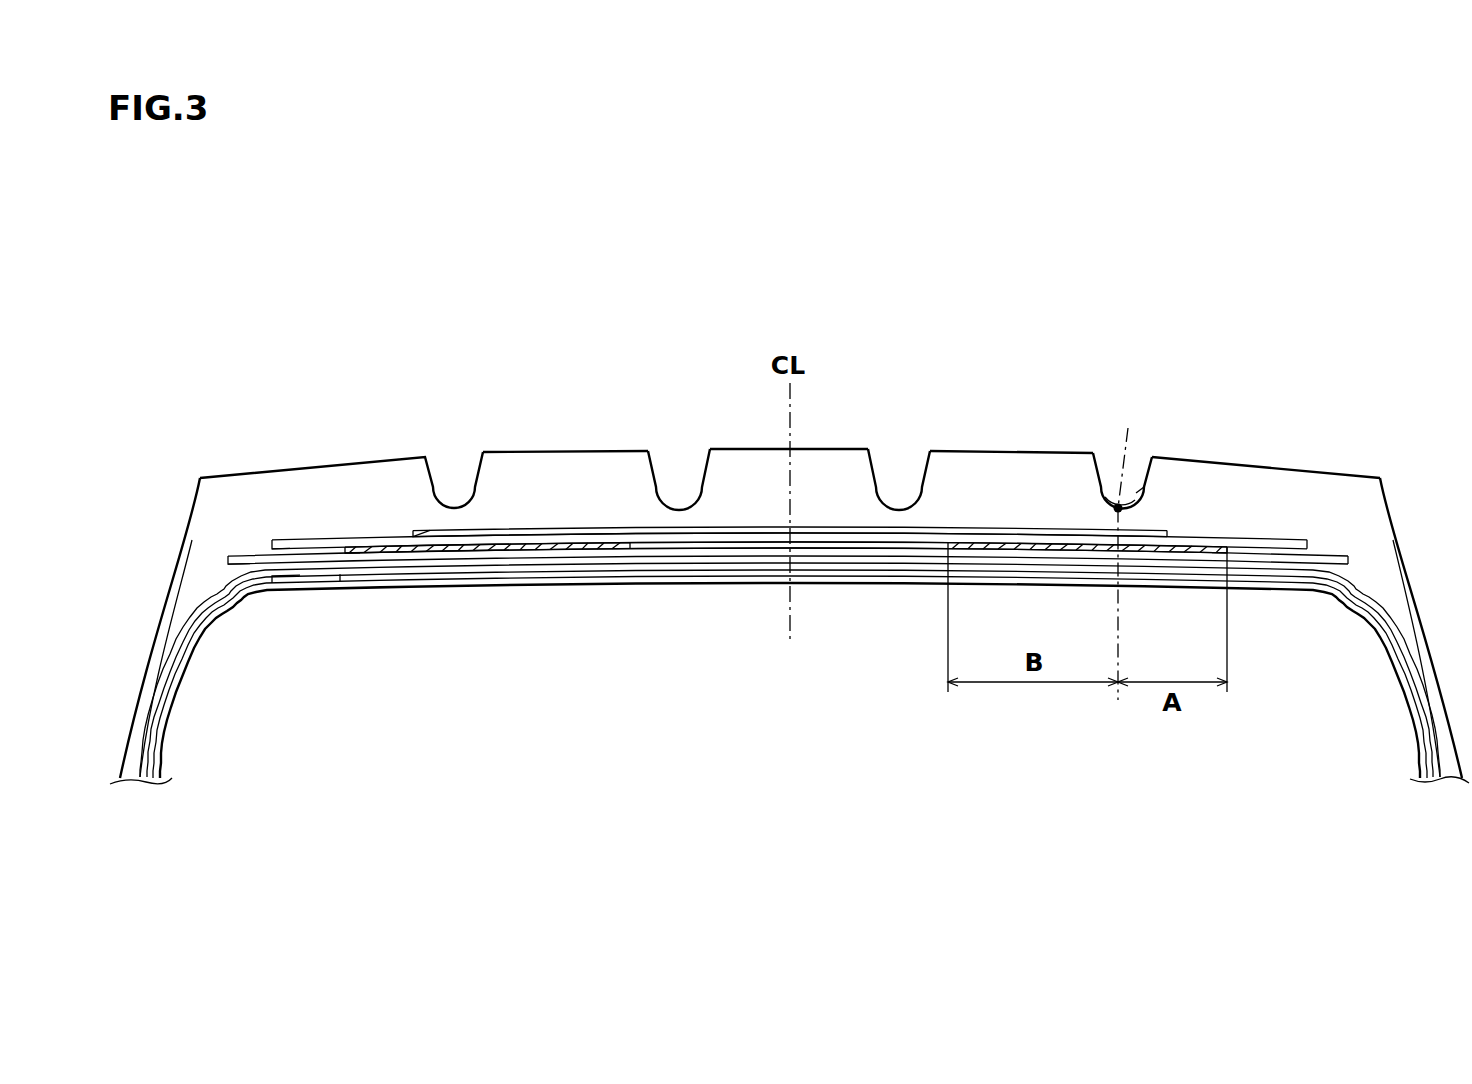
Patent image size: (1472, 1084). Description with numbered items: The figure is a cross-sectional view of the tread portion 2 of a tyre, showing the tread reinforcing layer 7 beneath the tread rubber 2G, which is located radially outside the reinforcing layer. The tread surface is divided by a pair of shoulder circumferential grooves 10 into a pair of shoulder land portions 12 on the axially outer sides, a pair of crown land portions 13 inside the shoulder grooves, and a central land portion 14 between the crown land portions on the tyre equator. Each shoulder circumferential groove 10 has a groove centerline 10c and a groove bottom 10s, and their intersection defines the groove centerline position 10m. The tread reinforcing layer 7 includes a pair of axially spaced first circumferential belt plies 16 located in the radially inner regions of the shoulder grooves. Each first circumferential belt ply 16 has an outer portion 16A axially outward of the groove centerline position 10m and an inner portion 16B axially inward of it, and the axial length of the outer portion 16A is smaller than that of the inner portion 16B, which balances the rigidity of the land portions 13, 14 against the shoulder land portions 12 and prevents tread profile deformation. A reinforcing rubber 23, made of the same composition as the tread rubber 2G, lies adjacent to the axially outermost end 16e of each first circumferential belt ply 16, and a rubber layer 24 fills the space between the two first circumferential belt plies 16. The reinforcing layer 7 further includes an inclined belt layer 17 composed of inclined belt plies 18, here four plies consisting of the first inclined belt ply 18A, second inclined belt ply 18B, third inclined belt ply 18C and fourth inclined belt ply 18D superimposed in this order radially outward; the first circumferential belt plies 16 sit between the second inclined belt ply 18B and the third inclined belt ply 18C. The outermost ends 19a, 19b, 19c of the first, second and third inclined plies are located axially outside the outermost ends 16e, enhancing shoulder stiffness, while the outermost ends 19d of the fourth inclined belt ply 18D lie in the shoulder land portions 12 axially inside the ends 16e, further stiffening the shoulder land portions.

The tread portion 2 is at (789, 516).
The tread rubber 2G is at (587, 492).
The tread reinforcing layer 7 is at (782, 555).
The shoulder circumferential groove 10 is at (1198, 523).
The groove centerline 10c is at (1128, 440).
The groove bottom 10s is at (1136, 494).
The groove centerline position 10m is at (1118, 510).
The shoulder land portion 12 is at (1342, 458).
The crown land portion 13 is at (1005, 437).
The central land portion 14 is at (820, 420).
The first circumferential belt ply 16 is at (864, 518).
The outer portion 16A is at (1167, 549).
The inner portion 16B is at (1032, 549).
The axially outermost end 16e is at (347, 550).
The inclined belt layer 17 is at (218, 552).
The inclined belt ply 18 is at (782, 563).
The first inclined belt ply 18A is at (757, 652).
The second inclined belt ply 18B is at (782, 601).
The third inclined belt ply 18C is at (745, 548).
The fourth inclined belt ply 18D is at (762, 536).
The outermost end 19a is at (283, 575).
The outermost end 19b is at (228, 567).
The outermost end 19c is at (270, 547).
The outermost end 19d is at (411, 533).
The reinforcing rubber 23 is at (1325, 562).
The rubber layer 24 is at (843, 545).